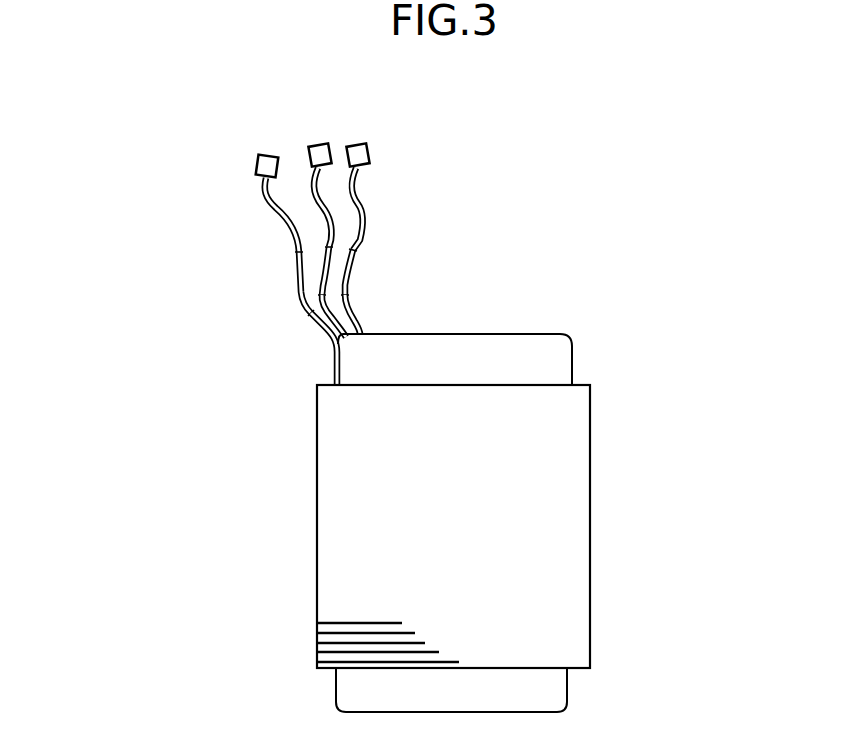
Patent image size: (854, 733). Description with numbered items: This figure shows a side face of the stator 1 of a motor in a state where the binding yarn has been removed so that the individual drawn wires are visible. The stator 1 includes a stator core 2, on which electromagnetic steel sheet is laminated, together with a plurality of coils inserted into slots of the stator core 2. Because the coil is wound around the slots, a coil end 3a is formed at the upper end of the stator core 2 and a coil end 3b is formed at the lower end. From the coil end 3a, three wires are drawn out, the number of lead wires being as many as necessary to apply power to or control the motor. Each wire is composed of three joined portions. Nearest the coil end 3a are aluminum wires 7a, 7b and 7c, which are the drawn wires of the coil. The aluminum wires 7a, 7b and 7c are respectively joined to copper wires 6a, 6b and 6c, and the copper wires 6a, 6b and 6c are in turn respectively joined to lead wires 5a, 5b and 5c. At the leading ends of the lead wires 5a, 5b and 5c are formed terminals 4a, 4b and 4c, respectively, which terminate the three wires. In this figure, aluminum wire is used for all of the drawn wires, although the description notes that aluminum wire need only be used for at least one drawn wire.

The stator 1 is at (671, 297).
The stator core 2 is at (568, 518).
The coil end 3a is at (574, 352).
The coil end 3b is at (558, 688).
The terminal 4a is at (263, 156).
The terminal 4b is at (322, 145).
The terminal 4c is at (368, 145).
The lead wire 5a is at (268, 203).
The lead wire 5b is at (354, 192).
The lead wire 5c is at (368, 212).
The copper wire 6a is at (297, 257).
The copper wire 6b is at (328, 291).
The copper wire 6c is at (352, 260).
The aluminum wire 7a is at (312, 318).
The aluminum wire 7b is at (324, 322).
The aluminum wire 7c is at (342, 337).